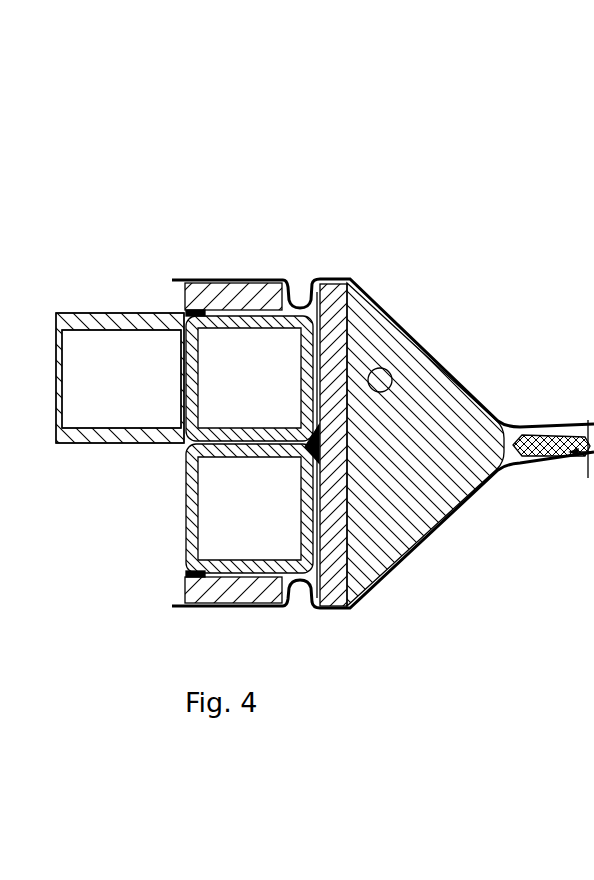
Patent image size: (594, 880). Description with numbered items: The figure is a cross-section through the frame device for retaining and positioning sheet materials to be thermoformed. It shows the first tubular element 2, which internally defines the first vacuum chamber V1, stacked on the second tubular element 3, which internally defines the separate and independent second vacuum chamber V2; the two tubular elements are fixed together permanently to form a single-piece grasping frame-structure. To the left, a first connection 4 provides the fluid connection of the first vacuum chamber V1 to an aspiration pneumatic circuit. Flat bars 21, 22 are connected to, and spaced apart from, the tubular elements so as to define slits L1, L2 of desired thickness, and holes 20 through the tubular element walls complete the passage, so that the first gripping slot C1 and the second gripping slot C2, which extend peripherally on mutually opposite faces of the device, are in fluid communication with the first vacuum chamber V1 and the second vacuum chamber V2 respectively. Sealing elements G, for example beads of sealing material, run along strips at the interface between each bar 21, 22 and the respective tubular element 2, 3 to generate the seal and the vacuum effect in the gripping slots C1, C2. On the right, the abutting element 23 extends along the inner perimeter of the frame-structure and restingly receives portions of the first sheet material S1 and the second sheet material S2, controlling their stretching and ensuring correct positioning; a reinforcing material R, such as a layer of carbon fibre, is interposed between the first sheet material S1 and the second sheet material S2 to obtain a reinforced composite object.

The first tubular element 2 is at (197, 386).
The second tubular element 3 is at (184, 527).
The first connection 4 is at (88, 317).
The holes 20 is at (290, 386).
The bar 21 is at (207, 280).
The bar 22 is at (337, 573).
The abutting element 23 is at (413, 403).
The sealing elements G is at (352, 370).
The reinforcing material R is at (559, 457).
The first vacuum chamber V1 is at (222, 360).
The second vacuum chamber V2 is at (240, 537).
The slit L1 is at (270, 282).
The slit L2 is at (282, 565).
The first gripping slot C1 is at (313, 243).
The second gripping slot C2 is at (300, 620).
The first sheet material S1 is at (477, 392).
The second sheet material S2 is at (443, 527).